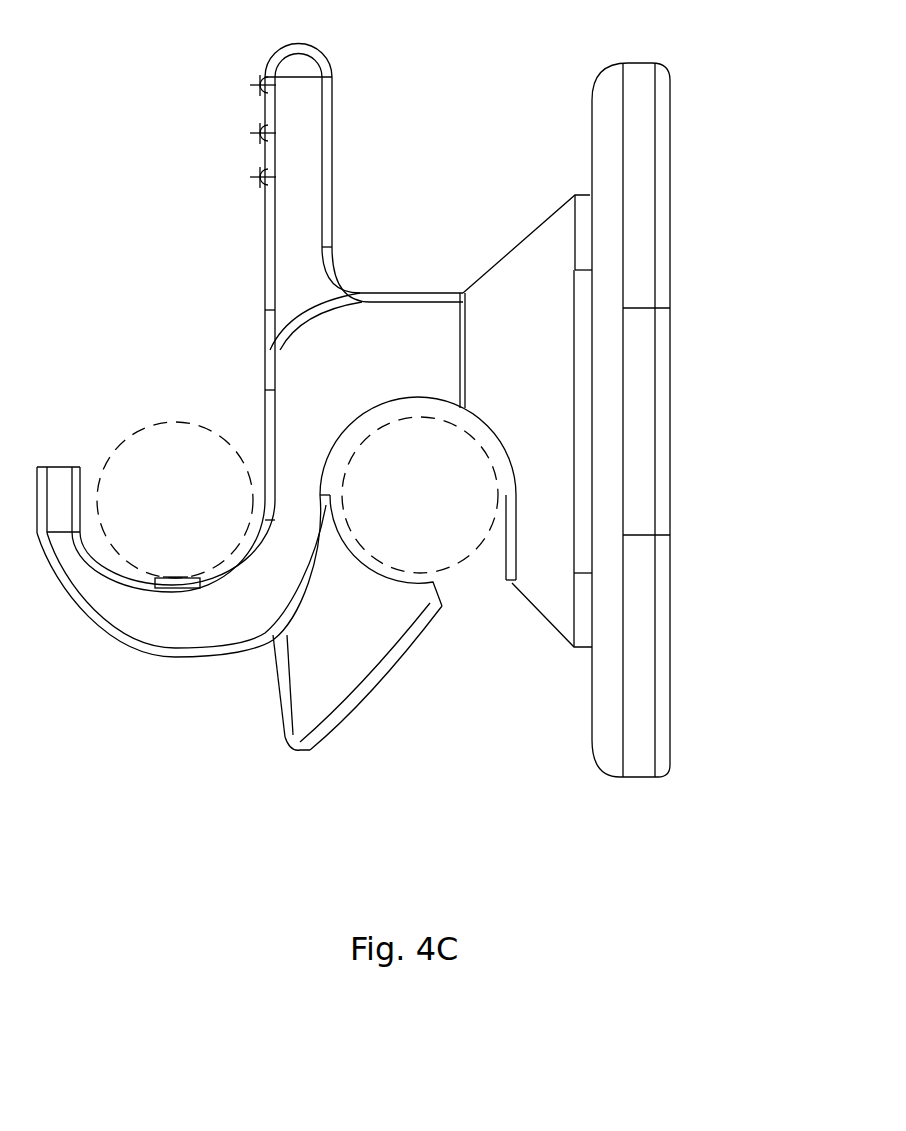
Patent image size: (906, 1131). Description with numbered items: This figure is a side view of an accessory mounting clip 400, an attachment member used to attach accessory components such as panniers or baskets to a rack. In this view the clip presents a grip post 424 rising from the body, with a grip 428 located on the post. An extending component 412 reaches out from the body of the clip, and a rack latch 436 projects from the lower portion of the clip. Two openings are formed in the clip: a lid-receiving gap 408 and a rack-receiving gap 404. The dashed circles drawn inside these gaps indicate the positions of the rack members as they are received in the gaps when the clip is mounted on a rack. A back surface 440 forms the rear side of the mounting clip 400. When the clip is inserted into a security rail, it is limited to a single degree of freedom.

The accessory mounting clip 400 is at (638, 98).
The rack-receiving gap 404 is at (388, 415).
The lid-receiving gap 408 is at (175, 577).
The extending component 412 is at (113, 605).
The grip post 424 is at (303, 115).
The grip 428 is at (223, 183).
The rack latch 436 is at (350, 655).
The back surface 440 is at (668, 287).